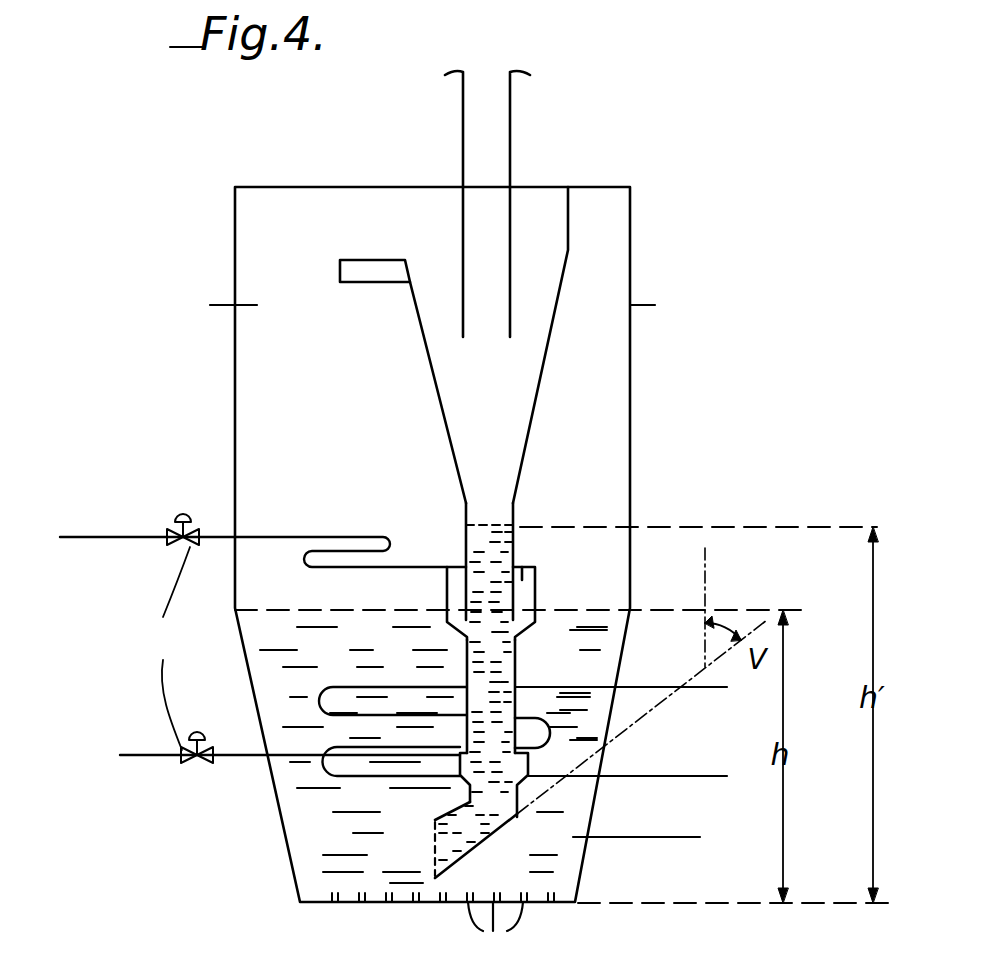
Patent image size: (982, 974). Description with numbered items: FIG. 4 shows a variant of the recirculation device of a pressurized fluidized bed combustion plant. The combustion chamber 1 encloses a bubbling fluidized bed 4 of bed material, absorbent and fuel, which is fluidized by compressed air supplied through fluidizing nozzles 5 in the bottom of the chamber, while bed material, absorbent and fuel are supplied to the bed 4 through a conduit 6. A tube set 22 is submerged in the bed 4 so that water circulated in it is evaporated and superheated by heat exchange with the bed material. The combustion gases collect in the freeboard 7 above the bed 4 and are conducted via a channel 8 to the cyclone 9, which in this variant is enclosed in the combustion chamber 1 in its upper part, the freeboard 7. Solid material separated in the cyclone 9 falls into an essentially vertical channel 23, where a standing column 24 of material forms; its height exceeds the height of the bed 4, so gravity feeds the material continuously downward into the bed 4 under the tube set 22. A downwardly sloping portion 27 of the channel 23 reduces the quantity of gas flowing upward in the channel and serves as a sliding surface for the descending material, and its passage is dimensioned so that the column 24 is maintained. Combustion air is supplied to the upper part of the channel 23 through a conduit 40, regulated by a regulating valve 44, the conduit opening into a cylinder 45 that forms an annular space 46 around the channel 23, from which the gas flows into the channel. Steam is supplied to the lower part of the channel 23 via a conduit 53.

The combustion chamber 1 is at (583, 189).
The bed 4 is at (258, 680).
The fluidizing nozzles 5 is at (250, 313).
The conduit 6 is at (670, 838).
The freeboard 7 is at (412, 435).
The channel 8 is at (362, 238).
The cyclone 9 is at (497, 398).
The tube set 22 is at (653, 778).
The channel 23 is at (517, 660).
The column of material 24 is at (500, 540).
The portion sloping downwardly 27 is at (497, 830).
The conduit 40 is at (125, 532).
The regulating valve 44 is at (143, 657).
The cylinder 45 is at (538, 587).
The annular space 46 is at (523, 566).
The conduit 53 is at (147, 751).